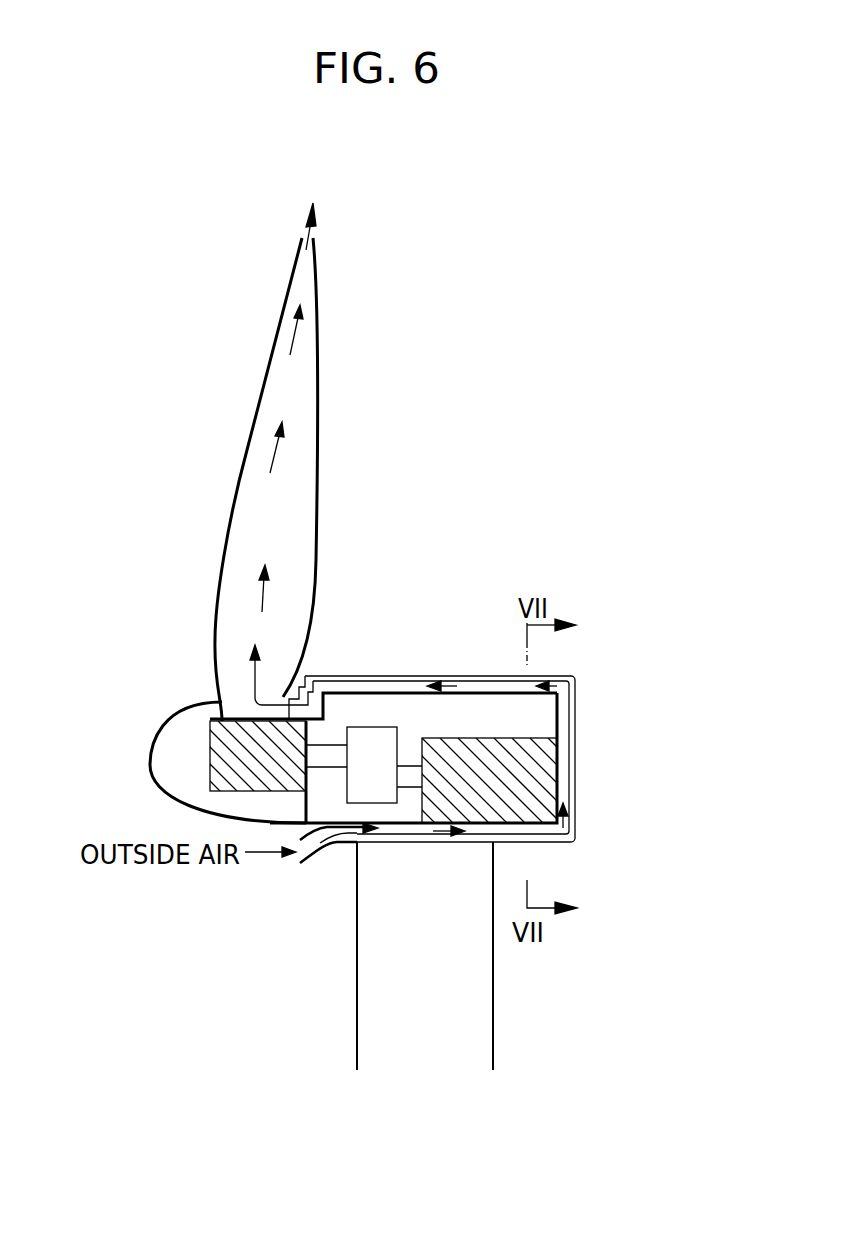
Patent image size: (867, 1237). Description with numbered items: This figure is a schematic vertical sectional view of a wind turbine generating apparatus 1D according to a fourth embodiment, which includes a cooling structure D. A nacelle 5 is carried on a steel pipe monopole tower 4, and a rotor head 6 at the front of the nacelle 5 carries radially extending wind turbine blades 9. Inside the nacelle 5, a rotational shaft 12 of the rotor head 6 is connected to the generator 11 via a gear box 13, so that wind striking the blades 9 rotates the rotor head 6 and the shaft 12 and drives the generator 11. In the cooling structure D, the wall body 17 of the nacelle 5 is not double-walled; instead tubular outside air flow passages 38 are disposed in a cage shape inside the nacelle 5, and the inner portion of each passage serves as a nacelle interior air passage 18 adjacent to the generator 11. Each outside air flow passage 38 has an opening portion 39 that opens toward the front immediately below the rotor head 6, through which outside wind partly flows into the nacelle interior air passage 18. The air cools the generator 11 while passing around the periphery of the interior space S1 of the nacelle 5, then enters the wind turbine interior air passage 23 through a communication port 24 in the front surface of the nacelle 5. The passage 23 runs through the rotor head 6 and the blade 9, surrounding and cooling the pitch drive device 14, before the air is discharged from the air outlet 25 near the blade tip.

The wind turbine generating apparatus 1D is at (550, 298).
The tower 4 is at (493, 968).
The nacelle 5 is at (466, 658).
The rotor head 6 is at (190, 712).
The wind turbine blade 9 is at (255, 410).
The generator 11 is at (547, 789).
The rotational shaft 12 is at (338, 742).
The gear box 13 is at (383, 727).
The pitch drive device 14 is at (210, 756).
The wall body 17 is at (575, 701).
The nacelle interior air passage 18 is at (572, 768).
The wind turbine interior air passage 23 is at (290, 490).
The communication port 24 is at (303, 712).
The air outlet 25 is at (308, 232).
The outside air flow passage 38 is at (566, 731).
The opening portion 39 is at (295, 862).
The interior space S1 is at (511, 724).
The cooling structure D is at (180, 950).